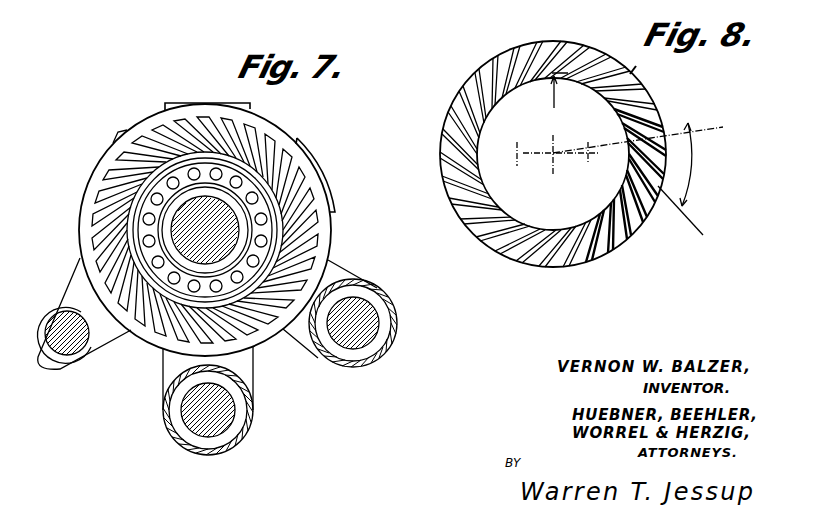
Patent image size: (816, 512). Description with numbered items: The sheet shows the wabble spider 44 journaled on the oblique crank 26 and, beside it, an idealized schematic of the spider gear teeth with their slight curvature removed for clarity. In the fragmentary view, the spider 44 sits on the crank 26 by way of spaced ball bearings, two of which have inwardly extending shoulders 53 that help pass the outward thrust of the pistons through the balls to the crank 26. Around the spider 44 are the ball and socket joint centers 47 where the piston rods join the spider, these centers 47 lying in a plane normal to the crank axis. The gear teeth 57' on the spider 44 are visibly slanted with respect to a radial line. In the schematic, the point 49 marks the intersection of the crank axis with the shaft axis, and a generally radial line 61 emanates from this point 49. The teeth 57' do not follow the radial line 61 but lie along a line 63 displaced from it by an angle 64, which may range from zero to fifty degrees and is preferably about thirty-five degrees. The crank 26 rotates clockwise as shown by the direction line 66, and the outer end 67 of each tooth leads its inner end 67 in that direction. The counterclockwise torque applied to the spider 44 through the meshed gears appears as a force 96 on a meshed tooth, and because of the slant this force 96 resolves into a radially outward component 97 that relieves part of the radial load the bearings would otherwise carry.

In FIG. 7, the oblique crank 26 is at (187, 245).
In FIG. 7, the wabble spider 44 is at (252, 112).
In FIG. 7, the ball and socket joint centers 47 is at (360, 323).
In FIG. 7, the inwardly extending shoulders 53 is at (253, 237).
In FIG. 7, the gear teeth 57' is at (223, 230).
In FIG. 8, the gear teeth 57' is at (566, 154).
In FIG. 8, the point of intersection 49 is at (553, 152).
In FIG. 8, the radial line 61 is at (707, 127).
In FIG. 8, the tooth line 63 is at (683, 206).
In FIG. 8, the angle 64 is at (690, 162).
In FIG. 8, the direction line 66 is at (517, 158).
In FIG. 8, the tooth end 67 is at (658, 197).
In FIG. 8, the force 96 is at (641, 63).
In FIG. 8, the radially outward force component 97 is at (555, 100).